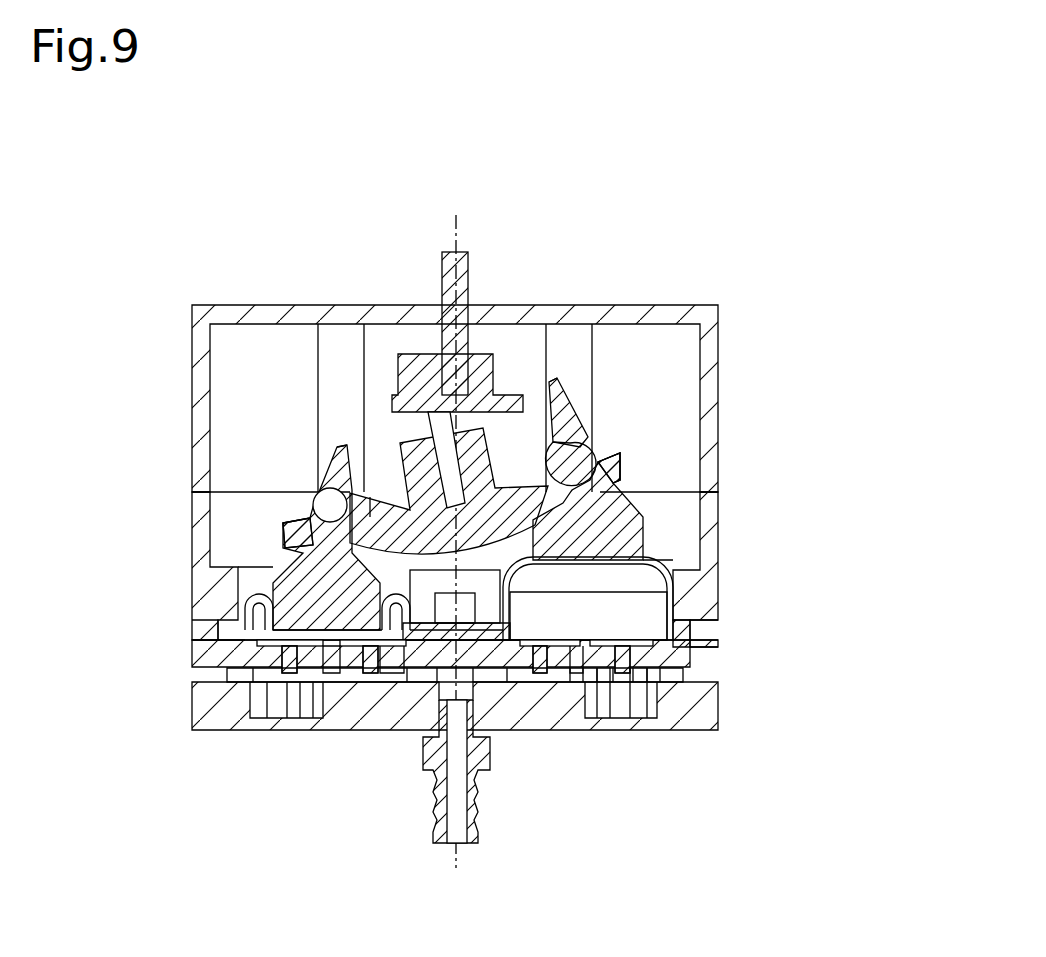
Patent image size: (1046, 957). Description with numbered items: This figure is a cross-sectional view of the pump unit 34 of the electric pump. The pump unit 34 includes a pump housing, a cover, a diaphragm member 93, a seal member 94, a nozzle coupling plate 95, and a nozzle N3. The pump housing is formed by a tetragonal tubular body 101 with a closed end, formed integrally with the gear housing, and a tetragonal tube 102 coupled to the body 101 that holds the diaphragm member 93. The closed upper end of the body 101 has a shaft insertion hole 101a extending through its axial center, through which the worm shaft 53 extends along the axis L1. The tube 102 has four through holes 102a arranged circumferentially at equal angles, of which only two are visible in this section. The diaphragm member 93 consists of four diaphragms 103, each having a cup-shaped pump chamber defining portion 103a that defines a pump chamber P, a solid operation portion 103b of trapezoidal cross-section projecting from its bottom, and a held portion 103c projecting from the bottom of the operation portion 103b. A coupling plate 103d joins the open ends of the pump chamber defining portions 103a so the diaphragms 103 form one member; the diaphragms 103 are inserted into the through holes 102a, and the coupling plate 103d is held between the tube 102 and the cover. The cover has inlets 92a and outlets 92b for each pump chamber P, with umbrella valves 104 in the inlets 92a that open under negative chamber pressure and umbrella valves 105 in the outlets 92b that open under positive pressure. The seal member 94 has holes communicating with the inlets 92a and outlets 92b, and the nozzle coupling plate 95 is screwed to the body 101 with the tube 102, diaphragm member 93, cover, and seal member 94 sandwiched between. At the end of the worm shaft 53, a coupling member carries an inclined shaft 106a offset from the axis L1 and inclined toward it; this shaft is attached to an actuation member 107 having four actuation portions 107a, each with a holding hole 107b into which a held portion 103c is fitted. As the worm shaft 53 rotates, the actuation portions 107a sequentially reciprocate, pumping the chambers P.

The pump unit 34 is at (747, 238).
The worm shaft 53 is at (468, 285).
The inlets 92a is at (625, 650).
The outlets 92b is at (340, 675).
The diaphragm member 93 is at (700, 618).
The seal member 94 is at (690, 670).
The nozzle coupling plate 95 is at (713, 705).
The body 101 is at (708, 388).
The shaft insertion hole 101a is at (442, 300).
The tube 102 is at (712, 590).
The through holes 102a is at (232, 618).
The diaphragms 103 is at (648, 540).
The pump chamber defining portion 103a is at (660, 568).
The operation portion 103b is at (290, 545).
The held portion 103c is at (300, 480).
The coupling plate 103d is at (350, 690).
The umbrella valves 104 is at (300, 682).
The umbrella valves 105 is at (540, 640).
The inclined shaft 106a is at (372, 410).
The actuation member 107 is at (390, 492).
The actuation portions 107a is at (245, 500).
The holding hole 107b is at (545, 483).
The pump chamber P is at (585, 630).
The nozzle N3 is at (480, 780).
The axis L1 is at (458, 882).